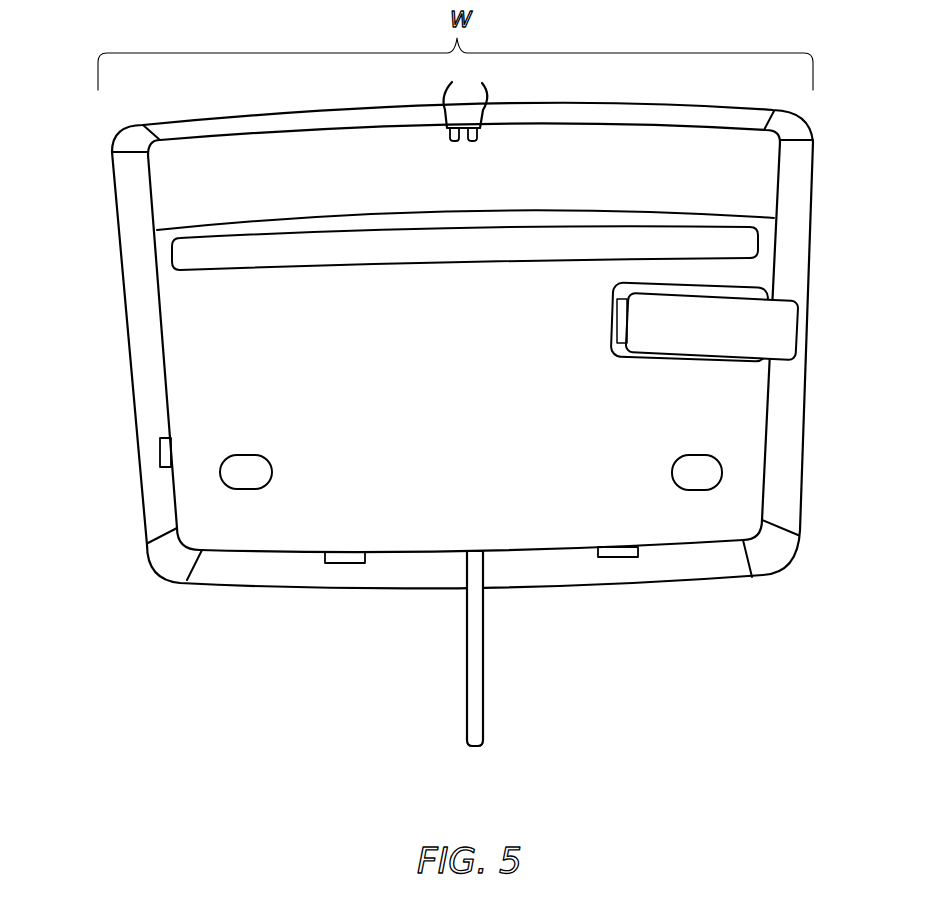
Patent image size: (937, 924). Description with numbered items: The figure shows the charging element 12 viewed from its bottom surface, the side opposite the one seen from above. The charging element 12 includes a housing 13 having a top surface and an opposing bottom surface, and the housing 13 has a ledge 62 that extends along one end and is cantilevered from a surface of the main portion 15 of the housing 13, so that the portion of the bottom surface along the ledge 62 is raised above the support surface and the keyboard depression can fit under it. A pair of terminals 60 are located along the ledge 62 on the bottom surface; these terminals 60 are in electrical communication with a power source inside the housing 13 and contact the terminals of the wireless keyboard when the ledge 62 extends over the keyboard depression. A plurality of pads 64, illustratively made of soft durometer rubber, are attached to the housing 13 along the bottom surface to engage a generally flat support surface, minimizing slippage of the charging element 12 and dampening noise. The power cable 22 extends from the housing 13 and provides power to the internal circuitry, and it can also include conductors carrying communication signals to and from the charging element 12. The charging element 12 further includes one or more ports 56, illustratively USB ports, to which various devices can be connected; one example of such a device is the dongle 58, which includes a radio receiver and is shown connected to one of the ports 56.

The charging element 12 is at (252, 679).
The housing 13 is at (178, 372).
The main portion 15 is at (712, 430).
The power cable 22 is at (480, 707).
The ports 56 is at (162, 450).
The dongle 58 is at (722, 338).
The terminals 60 is at (466, 102).
The ledge 62 is at (158, 178).
The pads 64 is at (176, 265).